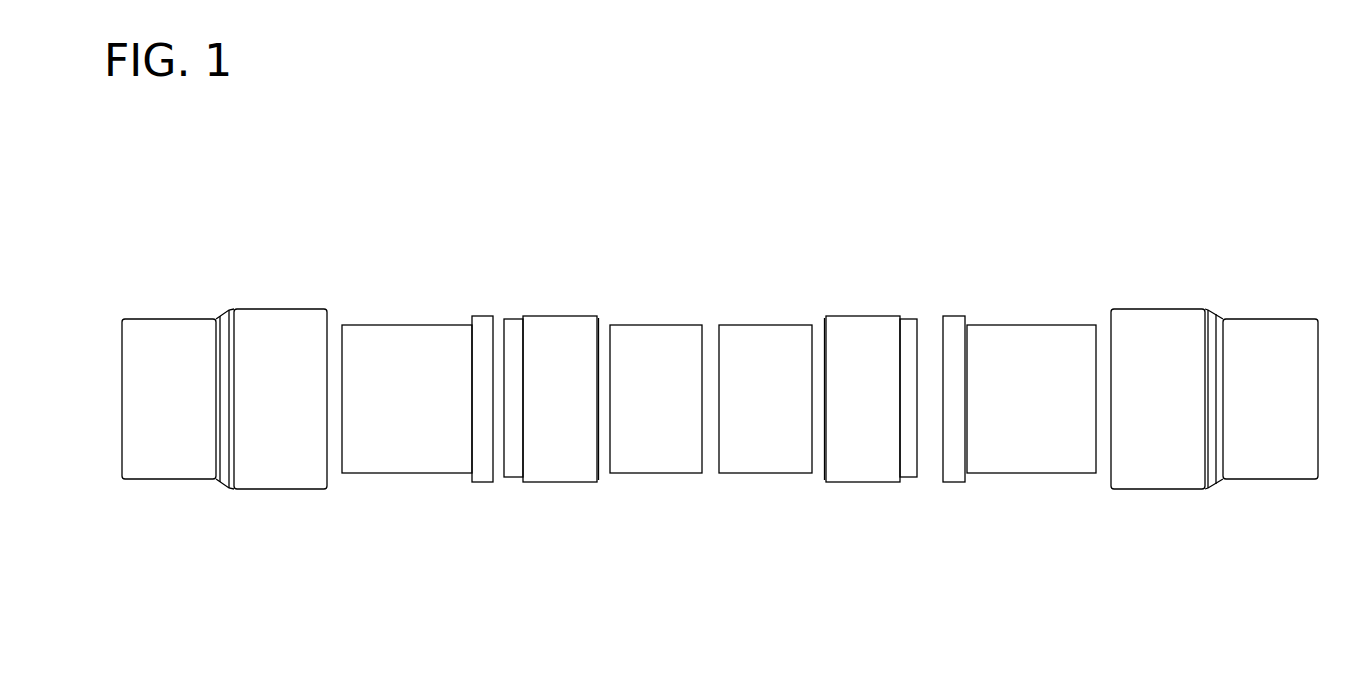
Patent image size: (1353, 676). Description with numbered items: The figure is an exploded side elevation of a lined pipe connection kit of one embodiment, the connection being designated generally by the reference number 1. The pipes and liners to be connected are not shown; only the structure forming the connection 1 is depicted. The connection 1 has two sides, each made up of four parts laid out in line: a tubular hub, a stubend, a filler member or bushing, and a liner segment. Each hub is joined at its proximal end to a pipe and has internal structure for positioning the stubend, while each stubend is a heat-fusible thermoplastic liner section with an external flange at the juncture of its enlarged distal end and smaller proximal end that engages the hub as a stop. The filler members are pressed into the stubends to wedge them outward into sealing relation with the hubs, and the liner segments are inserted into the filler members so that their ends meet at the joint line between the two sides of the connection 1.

The connection 1 is at (1193, 130).